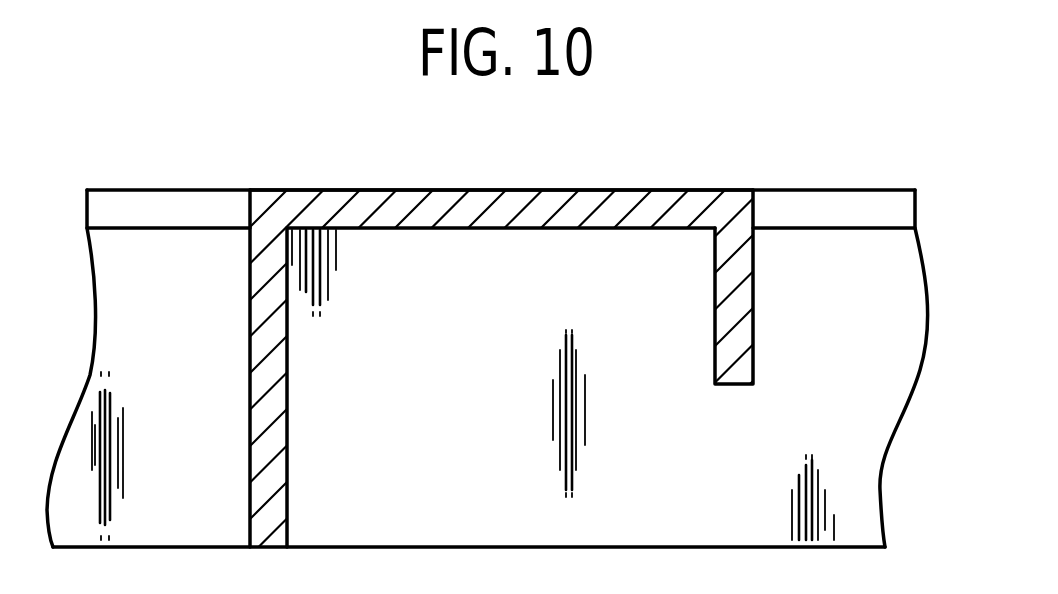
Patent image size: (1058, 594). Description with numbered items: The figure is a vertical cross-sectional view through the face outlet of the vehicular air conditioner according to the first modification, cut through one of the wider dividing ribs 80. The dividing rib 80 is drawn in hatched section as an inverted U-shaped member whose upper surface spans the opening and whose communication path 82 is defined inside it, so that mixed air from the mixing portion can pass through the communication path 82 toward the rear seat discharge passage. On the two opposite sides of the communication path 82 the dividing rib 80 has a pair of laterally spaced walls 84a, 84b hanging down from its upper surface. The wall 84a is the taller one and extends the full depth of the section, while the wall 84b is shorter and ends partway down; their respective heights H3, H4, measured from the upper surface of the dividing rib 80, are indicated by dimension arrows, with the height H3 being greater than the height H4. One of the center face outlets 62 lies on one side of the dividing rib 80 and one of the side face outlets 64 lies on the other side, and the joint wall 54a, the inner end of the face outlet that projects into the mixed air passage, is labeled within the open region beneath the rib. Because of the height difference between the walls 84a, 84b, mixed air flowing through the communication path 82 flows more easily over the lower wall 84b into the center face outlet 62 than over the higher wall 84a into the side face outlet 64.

The dividing rib 80 is at (472, 317).
The communication path 82 is at (417, 230).
The wall 84a is at (272, 508).
The wall 84b is at (735, 345).
The joint wall 54a is at (546, 298).
The center face outlet 62 is at (851, 203).
The side face outlet 64 is at (165, 208).
The height of wall 84a H3 is at (195, 190).
The height of wall 84b H4 is at (807, 190).